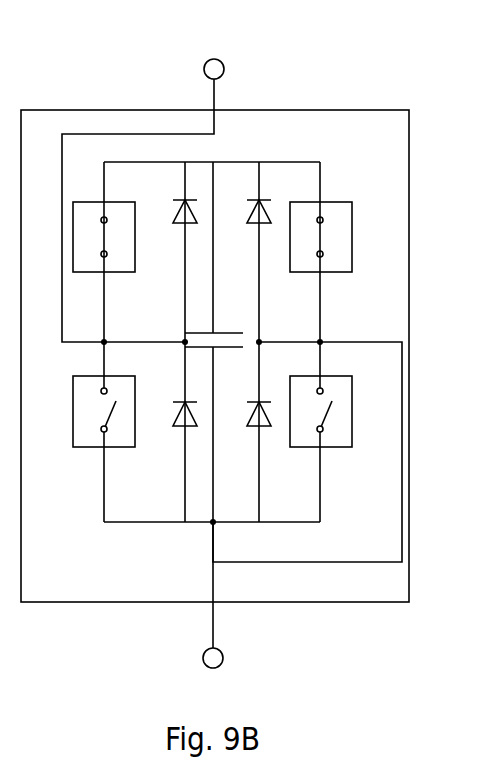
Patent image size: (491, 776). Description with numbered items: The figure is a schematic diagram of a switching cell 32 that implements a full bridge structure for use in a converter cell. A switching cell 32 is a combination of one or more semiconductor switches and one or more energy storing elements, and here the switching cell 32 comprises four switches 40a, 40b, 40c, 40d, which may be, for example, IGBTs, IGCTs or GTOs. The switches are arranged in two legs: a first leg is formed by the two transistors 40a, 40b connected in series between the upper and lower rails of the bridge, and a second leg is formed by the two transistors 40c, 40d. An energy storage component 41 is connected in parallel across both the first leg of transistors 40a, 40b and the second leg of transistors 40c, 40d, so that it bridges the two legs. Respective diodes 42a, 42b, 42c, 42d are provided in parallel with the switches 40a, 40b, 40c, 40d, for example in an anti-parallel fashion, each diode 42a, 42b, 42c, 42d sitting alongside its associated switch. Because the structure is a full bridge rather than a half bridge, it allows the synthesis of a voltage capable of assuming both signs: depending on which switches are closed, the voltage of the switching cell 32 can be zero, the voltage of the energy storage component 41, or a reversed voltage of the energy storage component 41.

The switching cell 32 is at (309, 125).
The switch 40a is at (135, 238).
The switch 40b is at (135, 410).
The switch 40c is at (352, 234).
The switch 40d is at (353, 410).
The energy storage component 41 is at (215, 348).
The diode 42a is at (172, 200).
The diode 42b is at (184, 432).
The diode 42c is at (272, 200).
The diode 42d is at (262, 432).